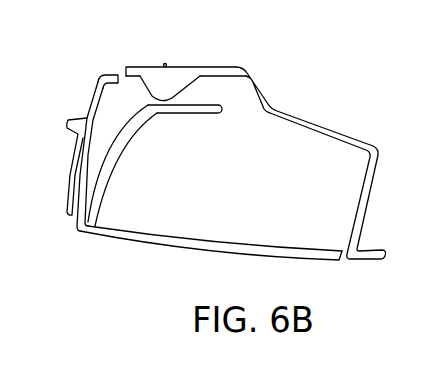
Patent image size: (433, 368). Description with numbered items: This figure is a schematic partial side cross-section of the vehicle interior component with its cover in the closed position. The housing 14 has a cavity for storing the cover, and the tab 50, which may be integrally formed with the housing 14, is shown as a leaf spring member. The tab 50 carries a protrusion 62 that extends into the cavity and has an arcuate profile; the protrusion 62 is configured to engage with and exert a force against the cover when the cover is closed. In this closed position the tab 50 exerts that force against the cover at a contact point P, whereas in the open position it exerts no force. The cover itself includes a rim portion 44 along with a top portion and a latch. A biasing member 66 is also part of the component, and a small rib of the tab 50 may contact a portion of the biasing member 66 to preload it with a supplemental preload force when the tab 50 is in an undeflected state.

The housing 14 is at (302, 60).
The tab 50 is at (187, 67).
The biasing member 66 is at (165, 65).
The protrusion 62 is at (157, 98).
The contact point P is at (165, 98).
The rim portion 44 is at (115, 242).